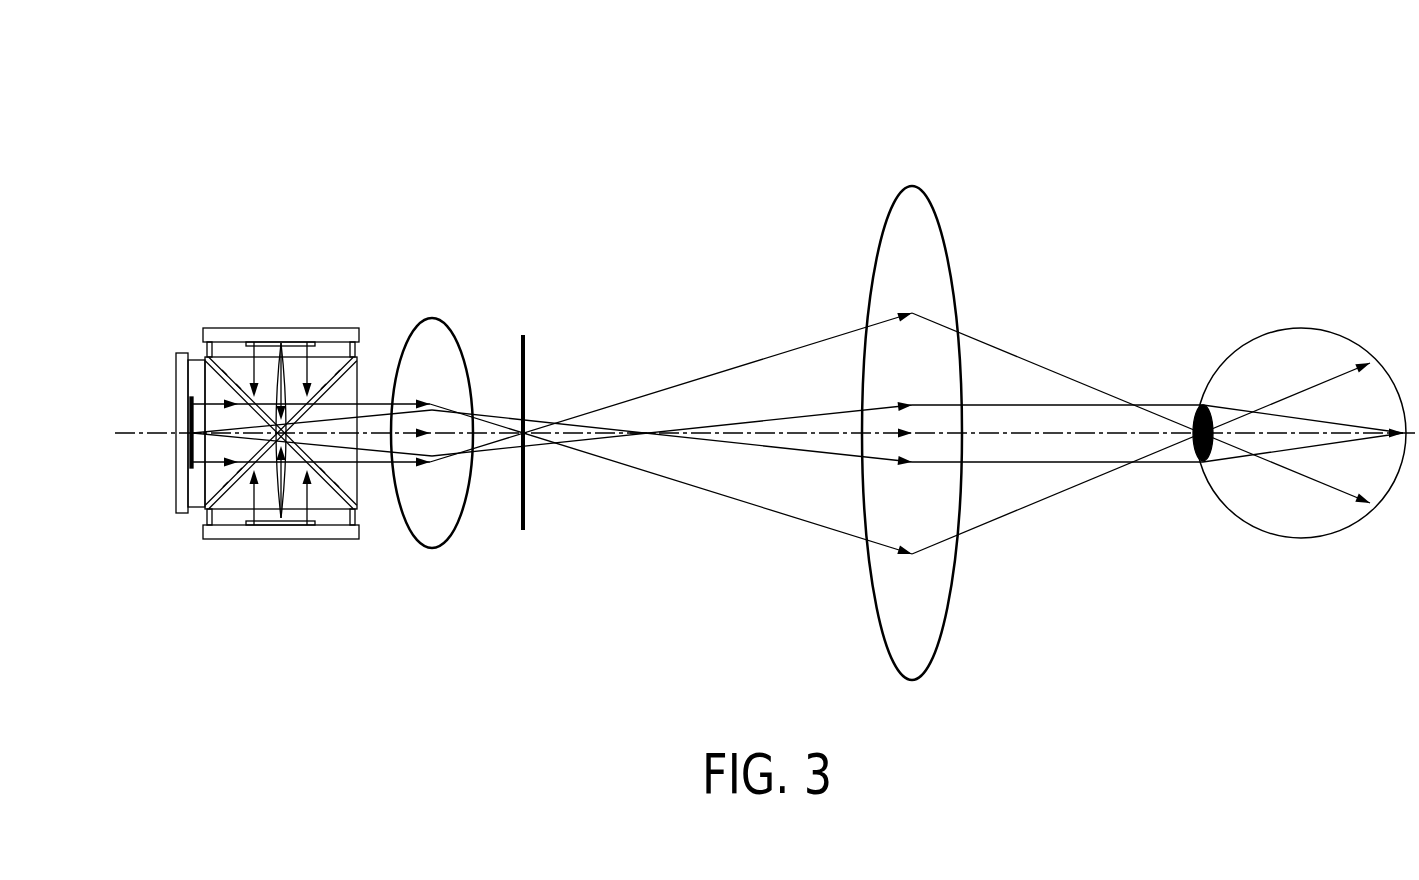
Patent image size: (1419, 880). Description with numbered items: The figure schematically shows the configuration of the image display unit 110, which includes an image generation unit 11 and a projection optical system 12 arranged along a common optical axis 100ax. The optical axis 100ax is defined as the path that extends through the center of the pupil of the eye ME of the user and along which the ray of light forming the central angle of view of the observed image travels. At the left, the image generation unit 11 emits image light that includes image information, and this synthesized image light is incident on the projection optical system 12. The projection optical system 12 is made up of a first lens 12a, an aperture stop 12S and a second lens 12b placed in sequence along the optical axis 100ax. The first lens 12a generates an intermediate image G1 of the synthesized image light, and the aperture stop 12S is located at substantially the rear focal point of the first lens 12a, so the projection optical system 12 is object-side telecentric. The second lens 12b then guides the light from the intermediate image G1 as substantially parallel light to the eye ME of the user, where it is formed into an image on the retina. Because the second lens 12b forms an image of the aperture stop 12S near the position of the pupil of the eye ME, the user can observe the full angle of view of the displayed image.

The image display unit 110 is at (1032, 162).
The image generation unit 11 is at (273, 316).
The projection optical system 12 is at (917, 115).
The first lens 12a is at (426, 333).
The second lens 12b is at (895, 228).
The aperture stop 12S is at (525, 493).
The intermediate image G1 is at (643, 437).
The optical axis 100ax is at (130, 430).
The eye ME is at (1293, 345).